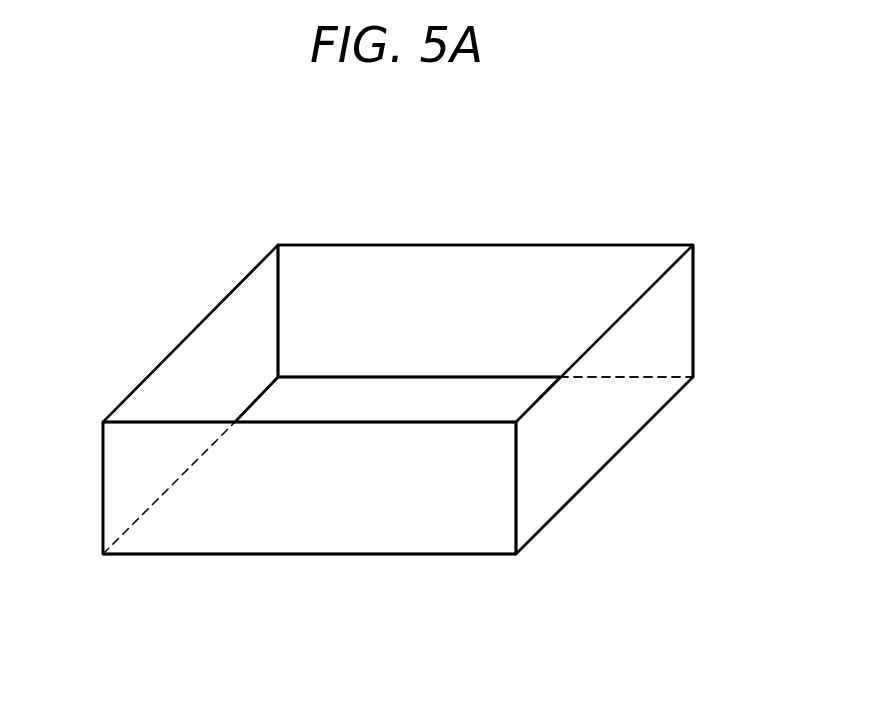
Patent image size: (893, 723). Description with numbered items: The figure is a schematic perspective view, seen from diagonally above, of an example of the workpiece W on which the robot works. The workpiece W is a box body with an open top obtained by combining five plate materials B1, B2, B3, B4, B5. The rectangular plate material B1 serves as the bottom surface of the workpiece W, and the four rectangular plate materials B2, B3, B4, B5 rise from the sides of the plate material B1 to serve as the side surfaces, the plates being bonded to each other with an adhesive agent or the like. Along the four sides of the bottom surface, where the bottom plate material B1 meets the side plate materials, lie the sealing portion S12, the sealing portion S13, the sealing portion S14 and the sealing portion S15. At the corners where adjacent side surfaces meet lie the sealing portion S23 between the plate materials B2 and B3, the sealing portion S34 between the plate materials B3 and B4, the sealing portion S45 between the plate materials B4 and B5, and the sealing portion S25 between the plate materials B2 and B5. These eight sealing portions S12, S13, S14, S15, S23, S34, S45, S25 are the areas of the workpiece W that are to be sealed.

The workpiece W is at (219, 164).
The plate material B1 is at (368, 405).
The plate material B2 is at (213, 350).
The plate material B3 is at (333, 528).
The plate material B4 is at (605, 422).
The plate material B5 is at (468, 288).
The sealing portion S12 is at (245, 418).
The sealing portion S13 is at (240, 557).
The sealing portion S14 is at (590, 482).
The sealing portion S15 is at (443, 377).
The sealing portion S23 is at (102, 478).
The sealing portion S25 is at (279, 303).
The sealing portion S34 is at (518, 495).
The sealing portion S45 is at (694, 303).